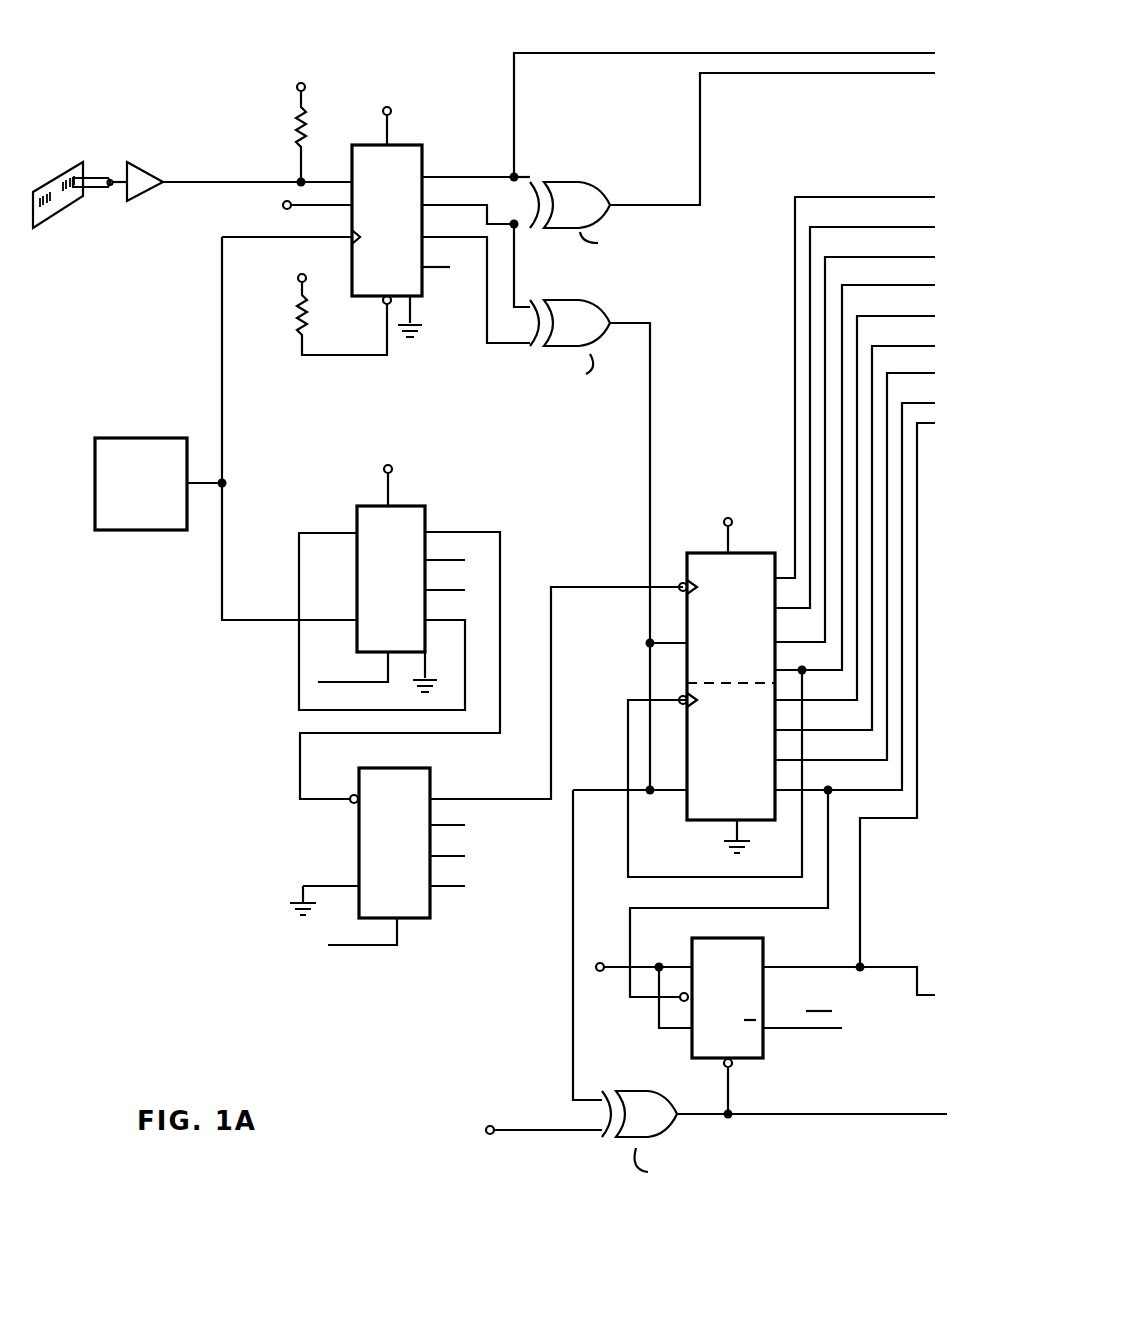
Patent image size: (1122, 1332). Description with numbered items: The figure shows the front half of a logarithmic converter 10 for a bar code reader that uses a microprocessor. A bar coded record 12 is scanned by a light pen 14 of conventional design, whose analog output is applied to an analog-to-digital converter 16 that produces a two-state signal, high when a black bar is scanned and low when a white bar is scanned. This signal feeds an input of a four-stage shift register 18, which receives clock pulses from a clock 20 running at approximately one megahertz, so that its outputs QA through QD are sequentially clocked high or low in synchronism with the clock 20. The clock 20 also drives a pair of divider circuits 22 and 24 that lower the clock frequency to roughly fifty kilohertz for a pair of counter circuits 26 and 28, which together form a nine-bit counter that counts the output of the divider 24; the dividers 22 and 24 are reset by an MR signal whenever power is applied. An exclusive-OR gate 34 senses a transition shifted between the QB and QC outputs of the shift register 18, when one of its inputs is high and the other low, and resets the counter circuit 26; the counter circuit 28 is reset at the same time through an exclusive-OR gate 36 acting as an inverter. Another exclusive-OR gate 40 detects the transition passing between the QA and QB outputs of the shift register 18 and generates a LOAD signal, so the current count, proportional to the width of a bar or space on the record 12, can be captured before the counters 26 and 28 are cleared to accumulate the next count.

The logarithmic converter 10 is at (255, 42).
The record 12 is at (54, 176).
The light pen 14 is at (92, 186).
The analog-to-digital converter 16 is at (141, 199).
The four-stage shift register 18 is at (415, 144).
The clock 20 is at (145, 437).
The divider circuit 22 is at (356, 506).
The divider circuit 24 is at (426, 918).
The counter circuit 26 is at (692, 808).
The counter circuit 28 is at (745, 938).
The exclusive-OR gate 34 is at (582, 306).
The exclusive-OR gate 36 is at (646, 1093).
The exclusive-OR gate 40 is at (567, 185).